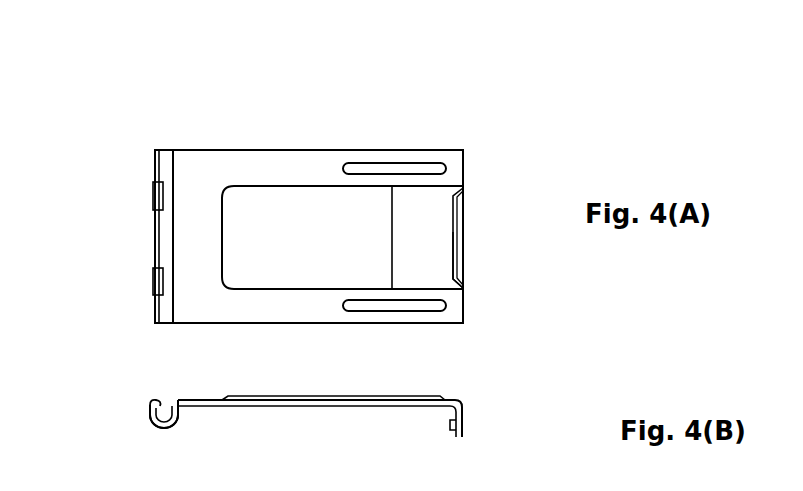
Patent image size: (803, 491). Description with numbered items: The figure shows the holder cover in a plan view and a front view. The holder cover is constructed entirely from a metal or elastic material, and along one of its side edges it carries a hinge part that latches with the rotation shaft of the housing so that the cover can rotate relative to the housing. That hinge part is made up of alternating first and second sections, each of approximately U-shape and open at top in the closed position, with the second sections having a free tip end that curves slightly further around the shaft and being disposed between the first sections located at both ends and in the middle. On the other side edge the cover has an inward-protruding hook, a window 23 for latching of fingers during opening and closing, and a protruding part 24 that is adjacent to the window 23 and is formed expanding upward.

The window 23 is at (442, 210).
The protruding part 24 is at (297, 200).